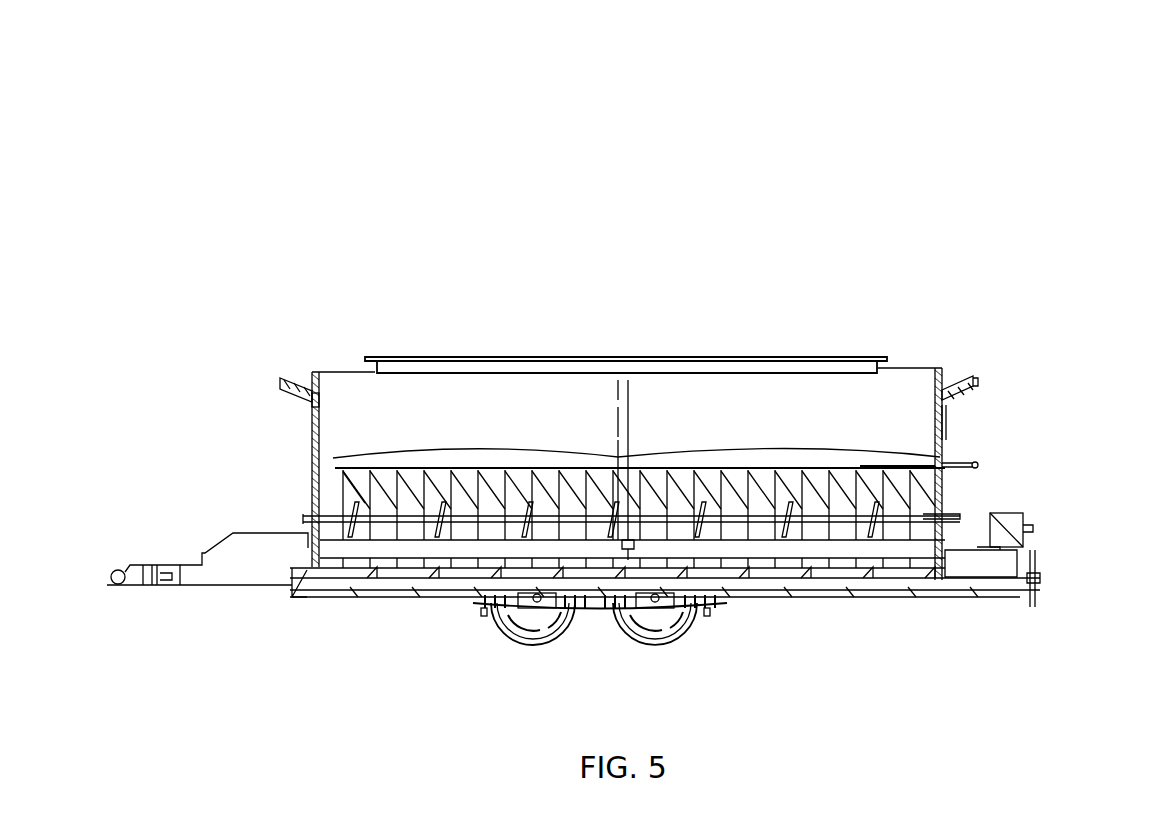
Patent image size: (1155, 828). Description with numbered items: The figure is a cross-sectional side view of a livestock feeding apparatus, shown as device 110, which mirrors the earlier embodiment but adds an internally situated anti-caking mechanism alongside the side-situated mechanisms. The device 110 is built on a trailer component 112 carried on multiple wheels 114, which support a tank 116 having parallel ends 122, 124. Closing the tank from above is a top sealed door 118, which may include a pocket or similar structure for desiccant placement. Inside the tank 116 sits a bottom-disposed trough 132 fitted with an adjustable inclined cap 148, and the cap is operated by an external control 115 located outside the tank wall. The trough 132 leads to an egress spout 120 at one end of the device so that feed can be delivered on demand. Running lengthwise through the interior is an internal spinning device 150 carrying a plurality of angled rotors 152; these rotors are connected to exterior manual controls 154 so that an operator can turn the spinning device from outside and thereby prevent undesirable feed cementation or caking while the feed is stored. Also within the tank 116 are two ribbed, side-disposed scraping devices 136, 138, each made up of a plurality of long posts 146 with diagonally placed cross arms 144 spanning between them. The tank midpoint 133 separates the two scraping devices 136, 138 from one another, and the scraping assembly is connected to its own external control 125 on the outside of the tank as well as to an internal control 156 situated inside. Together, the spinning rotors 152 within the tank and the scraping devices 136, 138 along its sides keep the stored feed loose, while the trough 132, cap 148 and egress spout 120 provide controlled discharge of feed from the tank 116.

The device 110 is at (353, 163).
The trailer component 112 is at (113, 566).
The wheels 114 is at (522, 632).
The external control 115 is at (290, 382).
The tank 116 is at (900, 383).
The top sealed door 118 is at (842, 355).
The egress spout 120 is at (1027, 543).
The end 122 is at (313, 370).
The end 124 is at (945, 418).
The external control 125 is at (973, 460).
The trough 132 is at (337, 545).
The tank midpoint 133 is at (617, 407).
The scraping device 136 is at (482, 445).
The scraping device 138 is at (792, 444).
The cross arms 144 is at (378, 467).
The long posts 146 is at (335, 482).
The adjustable inclined cap 148 is at (938, 548).
The internal spinning device 150 is at (330, 513).
The angled rotors 152 is at (883, 468).
The exterior manual controls 154 is at (295, 517).
The internal control 156 is at (630, 403).